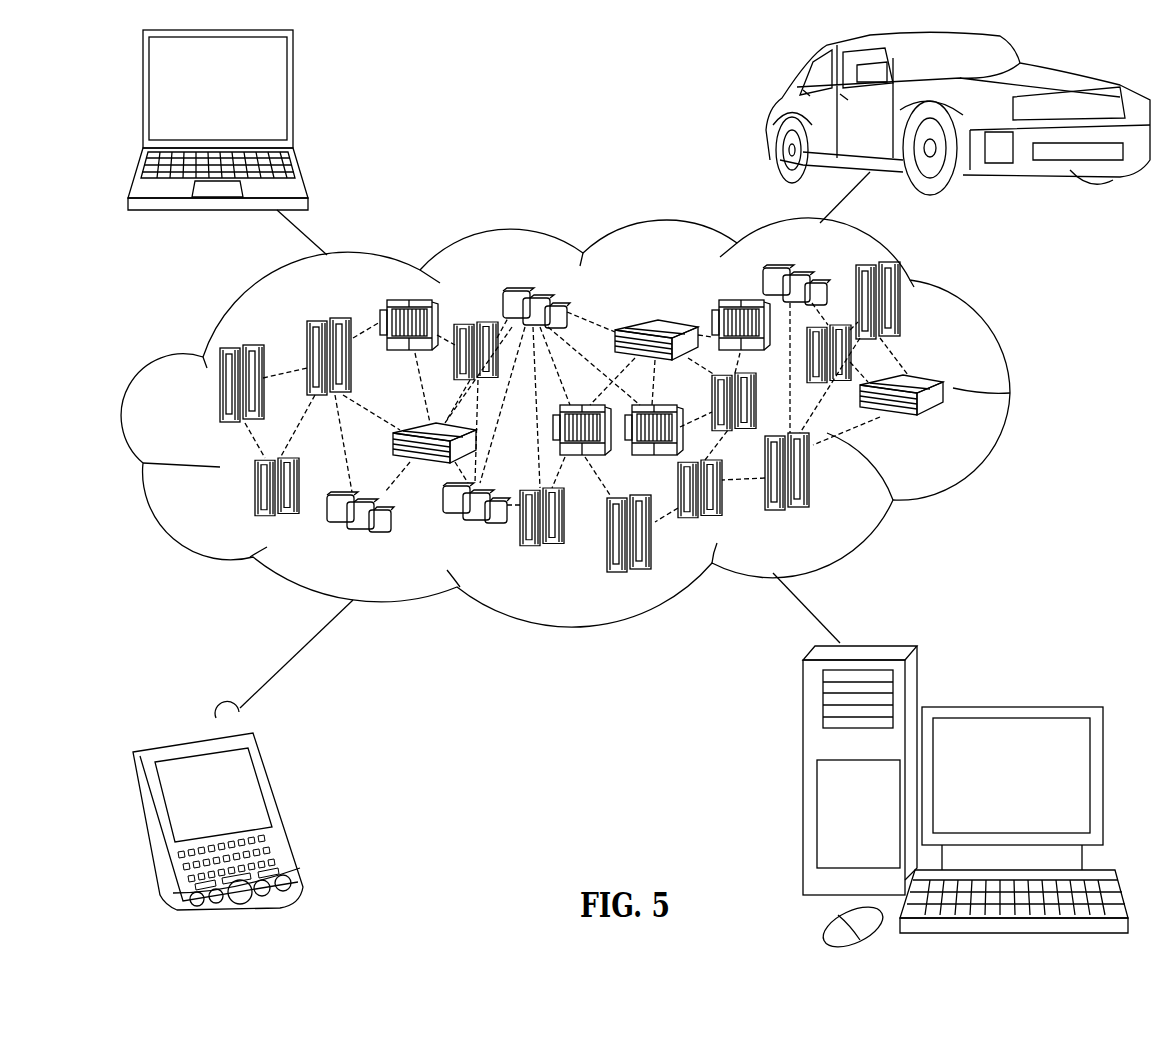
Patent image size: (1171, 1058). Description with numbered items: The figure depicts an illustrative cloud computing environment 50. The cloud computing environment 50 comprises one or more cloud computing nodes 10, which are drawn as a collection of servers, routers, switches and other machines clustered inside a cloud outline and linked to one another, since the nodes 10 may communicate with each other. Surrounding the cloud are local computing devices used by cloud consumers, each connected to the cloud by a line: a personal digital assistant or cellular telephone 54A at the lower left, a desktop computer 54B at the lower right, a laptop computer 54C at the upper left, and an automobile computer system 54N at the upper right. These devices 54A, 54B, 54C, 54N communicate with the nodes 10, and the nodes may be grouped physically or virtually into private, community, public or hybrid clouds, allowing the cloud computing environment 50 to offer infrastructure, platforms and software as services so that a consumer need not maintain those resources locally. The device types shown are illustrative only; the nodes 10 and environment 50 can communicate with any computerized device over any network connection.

The cloud computing environment 50 is at (1010, 393).
The cloud computing node 10 is at (958, 432).
The personal digital assistant or cellular telephone 54A is at (288, 808).
The desktop computer 54B is at (1008, 707).
The laptop computer 54C is at (293, 100).
The automobile computer system 54N is at (768, 114).